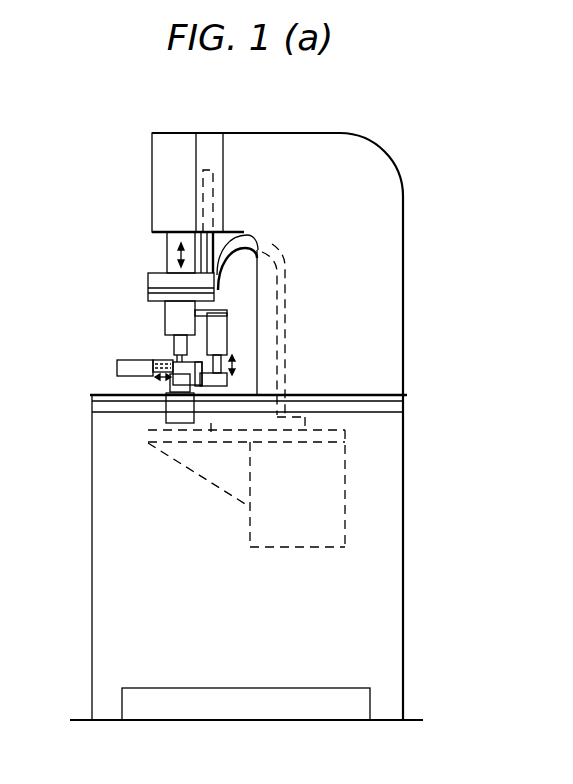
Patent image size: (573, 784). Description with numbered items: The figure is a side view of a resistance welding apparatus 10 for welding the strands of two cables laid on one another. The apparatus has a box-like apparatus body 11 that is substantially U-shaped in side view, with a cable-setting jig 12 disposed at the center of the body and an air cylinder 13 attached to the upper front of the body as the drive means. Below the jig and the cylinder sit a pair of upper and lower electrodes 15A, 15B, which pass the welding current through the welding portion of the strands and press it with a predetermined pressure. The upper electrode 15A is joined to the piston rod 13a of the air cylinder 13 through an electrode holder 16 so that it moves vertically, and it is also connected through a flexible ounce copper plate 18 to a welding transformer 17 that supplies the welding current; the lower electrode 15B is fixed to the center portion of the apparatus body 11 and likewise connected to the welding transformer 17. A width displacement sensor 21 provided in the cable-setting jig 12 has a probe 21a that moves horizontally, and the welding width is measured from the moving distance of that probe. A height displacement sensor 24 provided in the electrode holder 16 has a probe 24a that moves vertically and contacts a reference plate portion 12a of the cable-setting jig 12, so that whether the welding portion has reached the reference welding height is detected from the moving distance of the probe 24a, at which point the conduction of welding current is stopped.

The resistance welding apparatus 10 is at (412, 418).
The apparatus body 11 is at (91, 592).
The cable-setting jig 12 is at (152, 383).
The reference plate portion 12a is at (218, 392).
The air cylinder 13 is at (152, 146).
The piston rod 13a is at (167, 246).
The upper electrode 15A is at (175, 362).
The lower electrode 15B is at (172, 384).
The electrode holder 16 is at (165, 312).
The welding transformer 17 is at (345, 527).
The ounce copper plate 18 is at (243, 232).
The width displacement sensor 21 is at (116, 368).
The probe 21a is at (168, 358).
The height displacement sensor 24 is at (228, 335).
The probe 24a is at (228, 376).